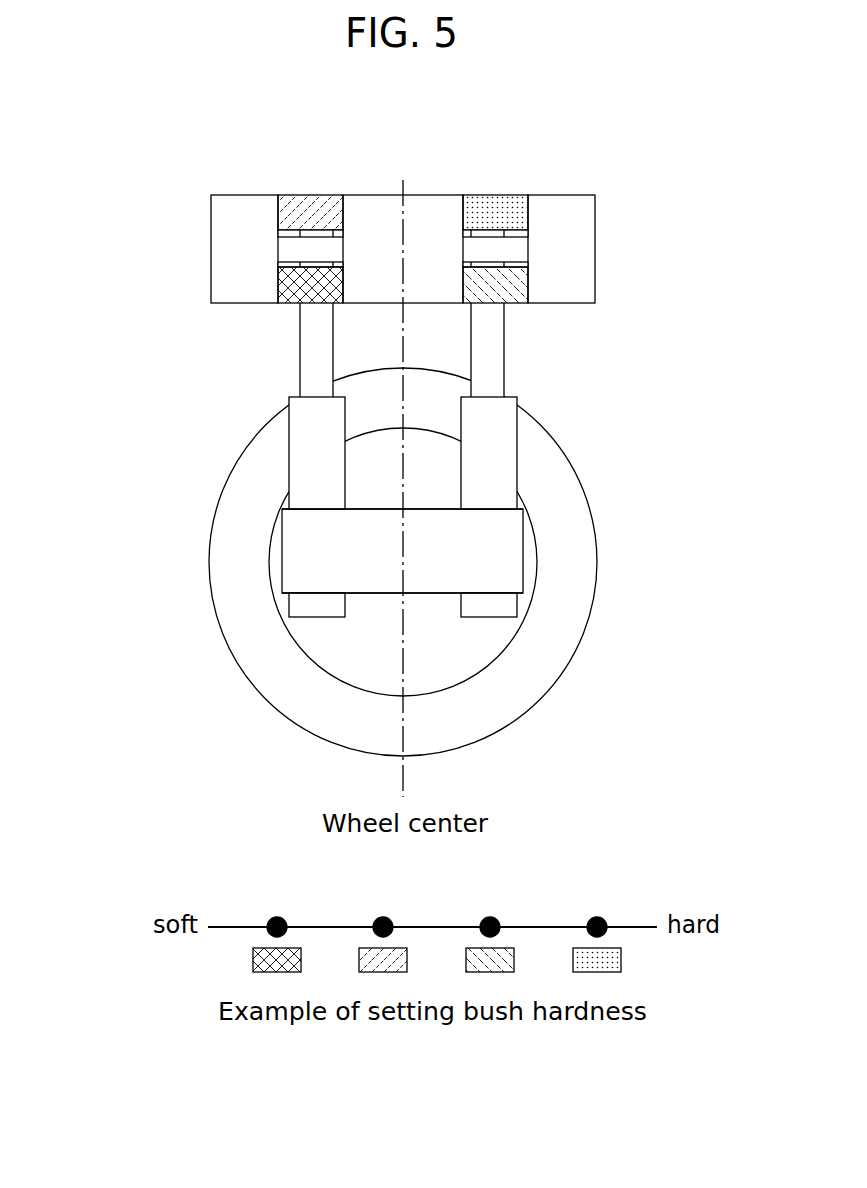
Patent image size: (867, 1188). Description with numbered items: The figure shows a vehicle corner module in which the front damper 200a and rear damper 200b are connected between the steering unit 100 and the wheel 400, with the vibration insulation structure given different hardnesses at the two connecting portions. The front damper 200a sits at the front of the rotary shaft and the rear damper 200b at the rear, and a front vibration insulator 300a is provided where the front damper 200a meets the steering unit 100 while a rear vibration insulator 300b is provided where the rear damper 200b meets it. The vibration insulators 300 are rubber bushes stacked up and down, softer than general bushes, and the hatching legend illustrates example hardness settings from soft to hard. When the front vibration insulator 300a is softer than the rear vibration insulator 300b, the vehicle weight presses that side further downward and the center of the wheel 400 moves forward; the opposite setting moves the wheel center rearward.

The steering unit 100 is at (437, 202).
The front damper 200a is at (532, 374).
The rear damper 200b is at (270, 374).
The vibration insulators 300 is at (409, 517).
The front vibration insulator 300a is at (516, 282).
The rear vibration insulator 300b is at (290, 283).
The wheel 400 is at (585, 568).